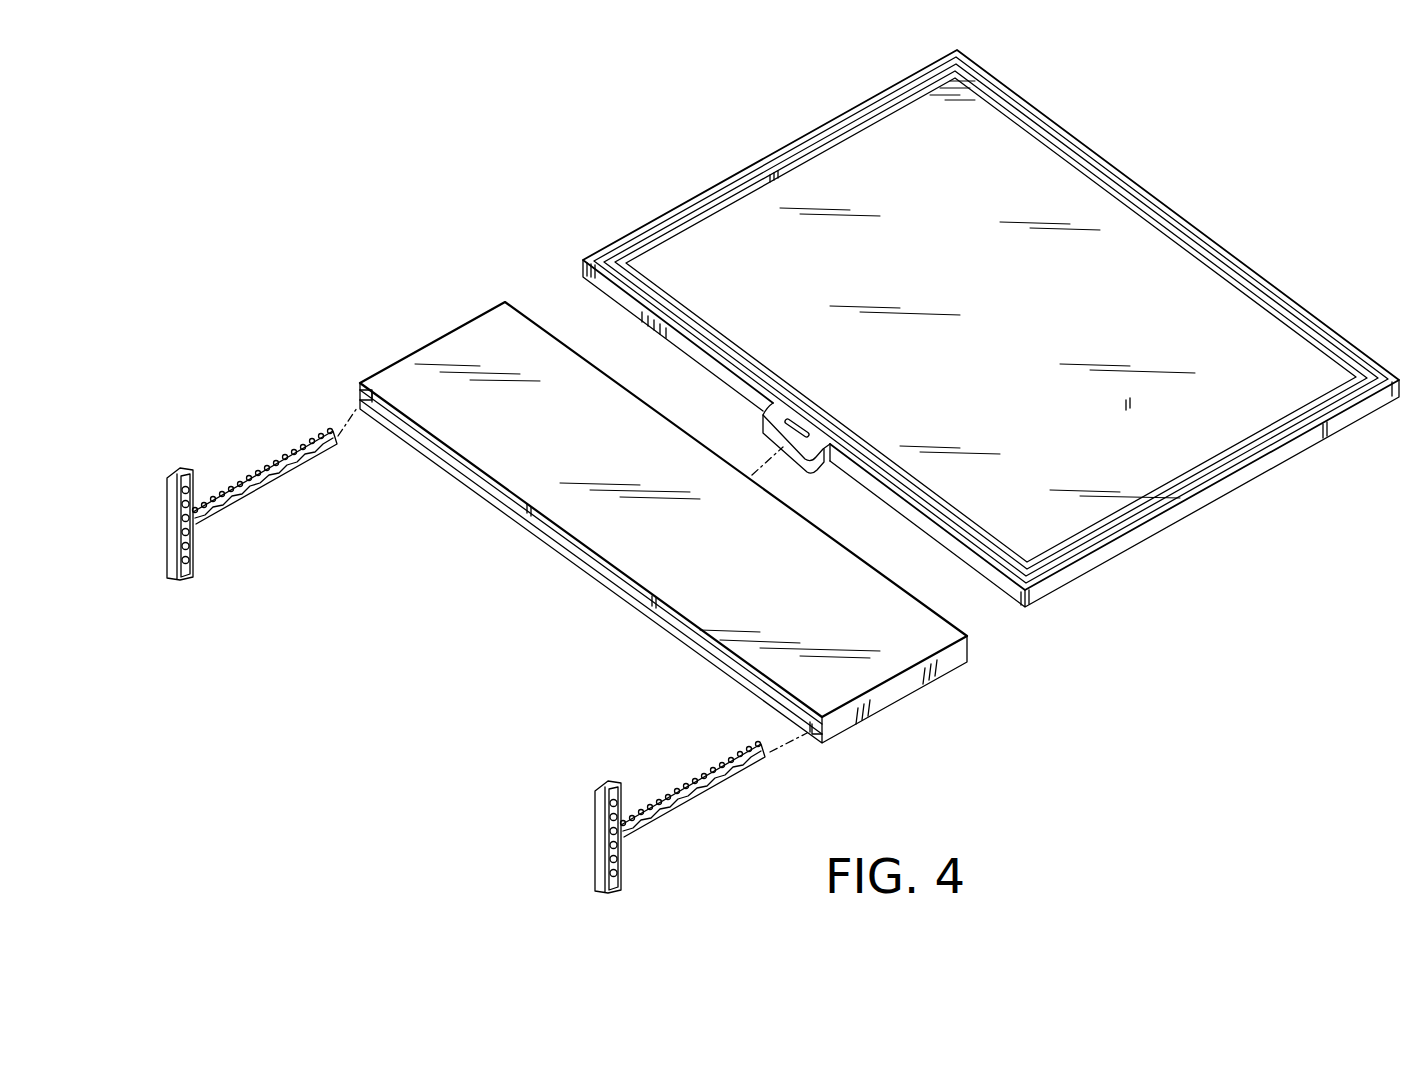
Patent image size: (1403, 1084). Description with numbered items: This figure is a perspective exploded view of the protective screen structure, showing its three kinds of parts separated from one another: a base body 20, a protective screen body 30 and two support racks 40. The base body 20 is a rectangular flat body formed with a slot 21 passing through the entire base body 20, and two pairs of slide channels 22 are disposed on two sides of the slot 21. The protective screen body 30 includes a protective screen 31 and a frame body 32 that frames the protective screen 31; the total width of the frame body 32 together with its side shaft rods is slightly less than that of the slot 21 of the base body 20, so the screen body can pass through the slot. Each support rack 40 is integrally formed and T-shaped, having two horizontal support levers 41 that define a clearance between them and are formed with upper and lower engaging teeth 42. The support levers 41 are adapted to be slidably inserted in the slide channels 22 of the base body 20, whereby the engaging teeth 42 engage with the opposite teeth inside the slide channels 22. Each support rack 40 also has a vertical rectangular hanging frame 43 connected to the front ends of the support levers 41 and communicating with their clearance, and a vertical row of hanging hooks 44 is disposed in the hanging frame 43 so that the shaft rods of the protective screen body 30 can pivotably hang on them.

The base body 20 is at (456, 345).
The slot 21 is at (581, 560).
The slide channels 22 is at (357, 394).
The protective screen body 30 is at (1228, 533).
The protective screen 31 is at (1205, 297).
The frame body 32 is at (1078, 575).
The support rack 40 is at (232, 455).
The support levers 41 is at (291, 470).
The engaging teeth 42 is at (231, 507).
The hanging frame 43 is at (172, 520).
The hanging hooks 44 is at (192, 565).